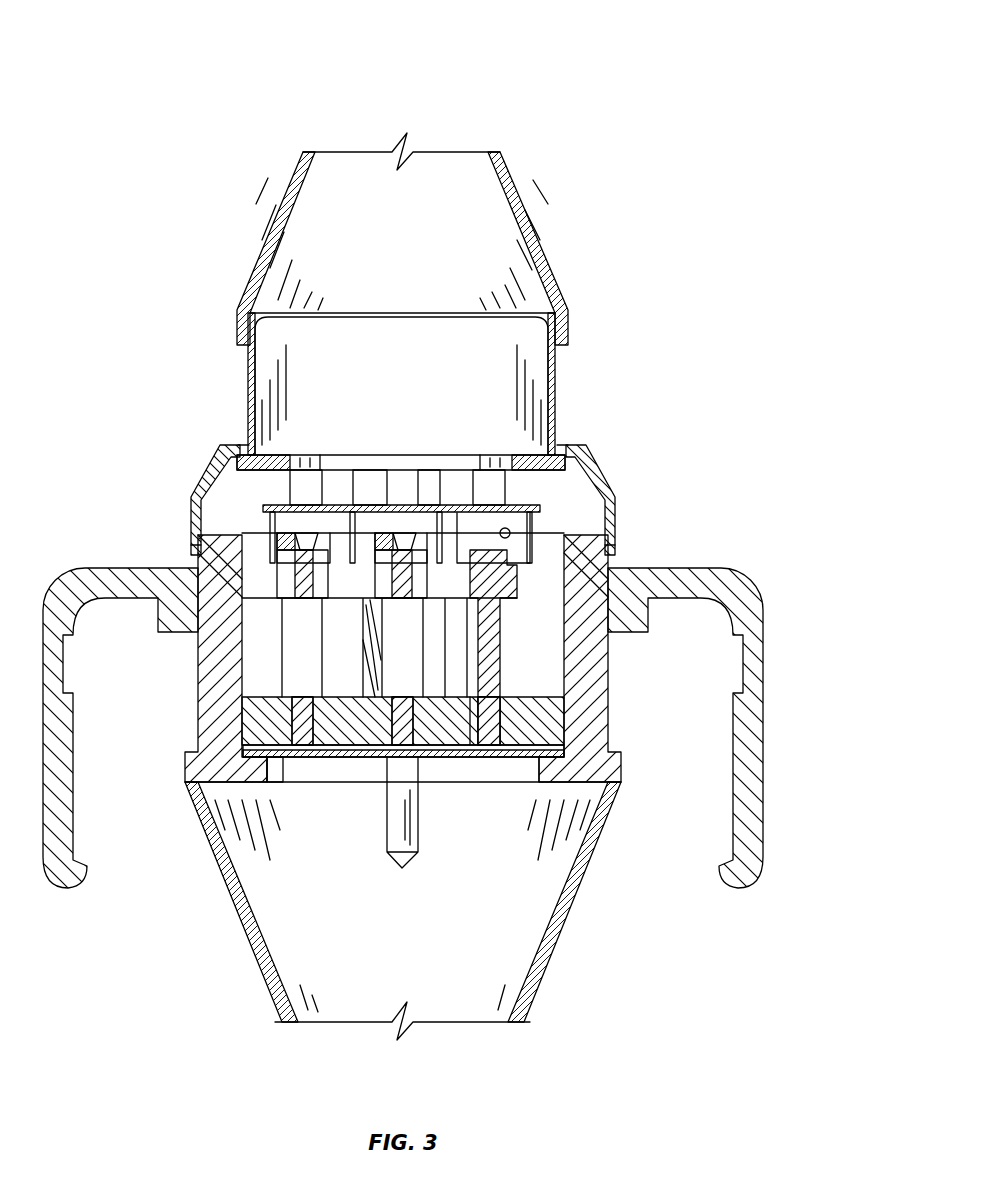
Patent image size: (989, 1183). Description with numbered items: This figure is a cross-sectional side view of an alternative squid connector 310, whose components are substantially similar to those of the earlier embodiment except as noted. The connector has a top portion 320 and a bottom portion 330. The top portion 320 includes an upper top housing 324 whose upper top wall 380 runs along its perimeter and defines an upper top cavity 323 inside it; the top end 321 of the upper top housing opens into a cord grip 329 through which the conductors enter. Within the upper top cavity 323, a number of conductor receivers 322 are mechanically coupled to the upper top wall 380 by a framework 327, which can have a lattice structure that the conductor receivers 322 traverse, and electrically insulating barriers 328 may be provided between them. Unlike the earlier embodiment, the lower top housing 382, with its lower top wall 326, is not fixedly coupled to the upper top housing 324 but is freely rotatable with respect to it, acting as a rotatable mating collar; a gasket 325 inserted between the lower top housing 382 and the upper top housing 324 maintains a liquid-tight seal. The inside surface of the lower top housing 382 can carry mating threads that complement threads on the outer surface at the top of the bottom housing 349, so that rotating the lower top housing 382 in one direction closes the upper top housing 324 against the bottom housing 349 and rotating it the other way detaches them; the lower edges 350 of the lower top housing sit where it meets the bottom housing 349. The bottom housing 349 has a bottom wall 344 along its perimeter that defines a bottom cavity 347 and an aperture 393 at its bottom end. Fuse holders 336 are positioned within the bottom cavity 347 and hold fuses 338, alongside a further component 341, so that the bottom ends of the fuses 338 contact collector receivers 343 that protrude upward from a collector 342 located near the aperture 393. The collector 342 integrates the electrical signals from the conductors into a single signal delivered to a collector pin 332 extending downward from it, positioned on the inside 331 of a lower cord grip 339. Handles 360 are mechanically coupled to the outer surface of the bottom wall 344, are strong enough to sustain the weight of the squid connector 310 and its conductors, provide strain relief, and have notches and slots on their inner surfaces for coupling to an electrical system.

The squid connector 310 is at (110, 45).
The top portion 320 is at (163, 333).
The upper reflector opening 321 is at (432, 165).
The upper reflector wall 329 is at (530, 222).
The lamp cavity 323 is at (401, 386).
The cavity side wall 380 is at (557, 403).
The upper top housing 324 is at (578, 360).
The base plate 322 is at (402, 468).
The gasket 325 is at (563, 448).
The lower top housing 382 is at (635, 502).
The lower top wall 326 is at (203, 473).
The circuit board 327 is at (260, 507).
The alignment hole 328 is at (512, 532).
The flange foot 350 is at (250, 548).
The bottom portion 330 is at (808, 745).
The housing side wall 339 is at (255, 583).
The lower reflector wall 331 is at (518, 965).
The handles 360 is at (85, 568).
The bottom housing 349 is at (178, 673).
The contact body 338 is at (280, 615).
The contact post 341 is at (490, 652).
The contact chamber 347 is at (267, 667).
The bottom wall 344 is at (197, 720).
The lower plate 343 is at (478, 760).
The lower board 336 is at (525, 755).
The housing bottom wall 393 is at (332, 785).
The locating pin 342 is at (282, 765).
The terminal pin 332 is at (420, 845).